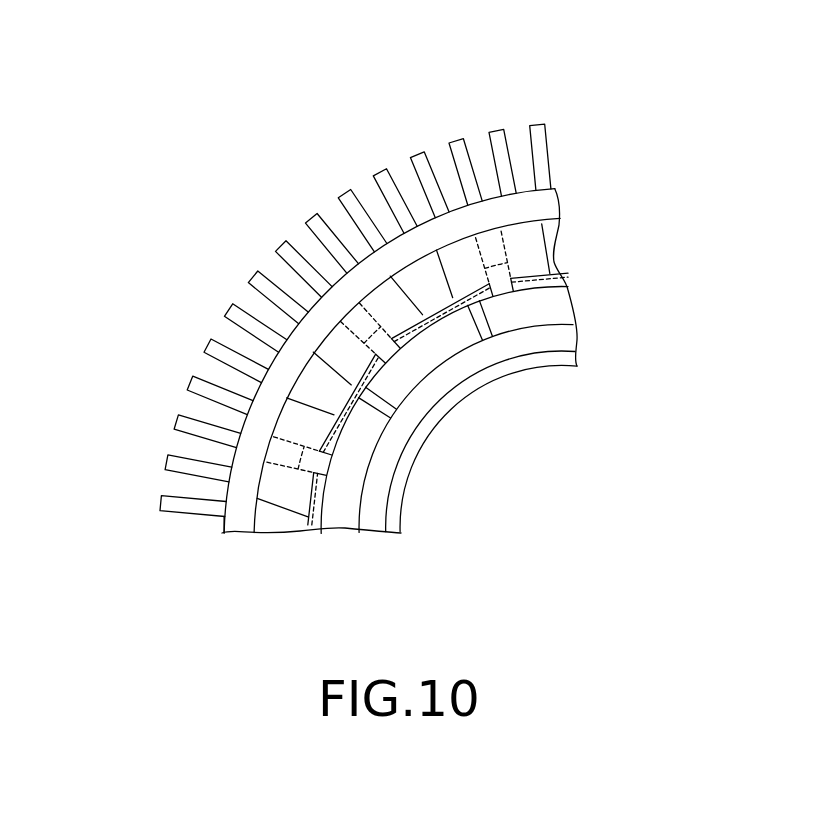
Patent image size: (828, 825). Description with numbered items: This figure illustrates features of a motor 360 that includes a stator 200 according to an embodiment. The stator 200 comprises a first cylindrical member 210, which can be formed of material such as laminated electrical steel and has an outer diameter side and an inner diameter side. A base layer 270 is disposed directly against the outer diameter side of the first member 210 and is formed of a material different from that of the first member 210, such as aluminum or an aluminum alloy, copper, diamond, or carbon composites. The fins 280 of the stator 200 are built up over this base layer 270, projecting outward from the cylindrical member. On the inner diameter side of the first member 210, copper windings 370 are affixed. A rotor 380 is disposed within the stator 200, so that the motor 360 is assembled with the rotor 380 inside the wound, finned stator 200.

The motor 360 is at (184, 86).
The stator 200 is at (242, 520).
The first cylindrical member 210 is at (300, 343).
The fins 280 is at (450, 143).
The base layer 270 is at (556, 186).
The copper windings 370 is at (557, 247).
The rotor 380 is at (560, 273).